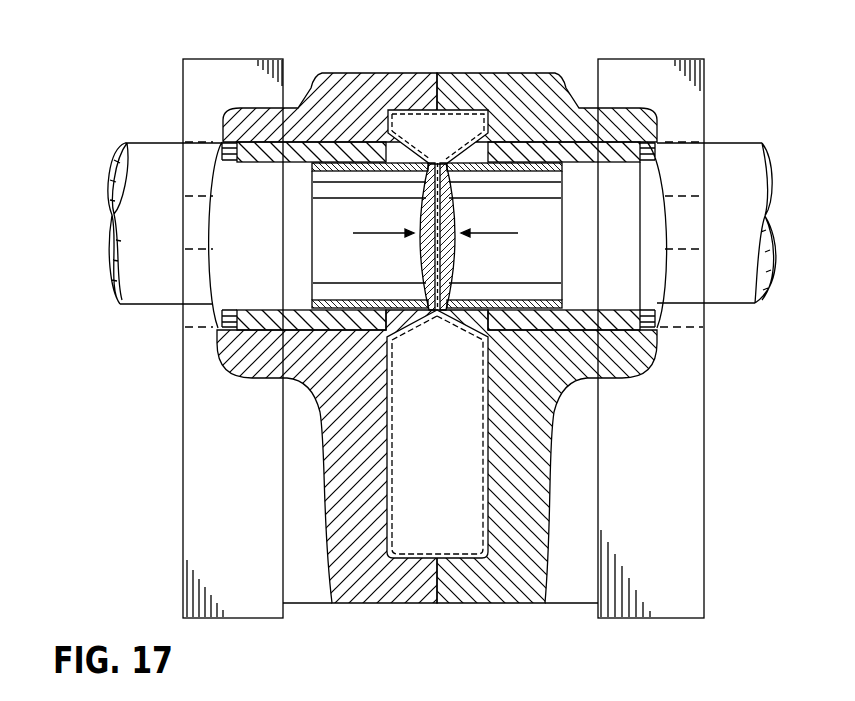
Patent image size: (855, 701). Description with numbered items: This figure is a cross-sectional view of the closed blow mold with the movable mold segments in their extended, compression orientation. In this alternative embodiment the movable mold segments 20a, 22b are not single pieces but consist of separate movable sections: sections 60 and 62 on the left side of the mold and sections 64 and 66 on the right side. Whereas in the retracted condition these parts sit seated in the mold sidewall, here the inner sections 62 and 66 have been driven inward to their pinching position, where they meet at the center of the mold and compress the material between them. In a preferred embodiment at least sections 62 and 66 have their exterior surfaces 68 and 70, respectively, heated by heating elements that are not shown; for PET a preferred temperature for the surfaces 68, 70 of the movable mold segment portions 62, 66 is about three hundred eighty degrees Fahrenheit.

The movable section 60 is at (328, 150).
The movable section 62 is at (372, 163).
The movable section 64 is at (508, 152).
The movable section 66 is at (552, 163).
The exterior surface 68 is at (418, 216).
The exterior surface 70 is at (456, 216).
The movable mold segment 20a is at (380, 273).
The second pipe section 22b is at (533, 273).